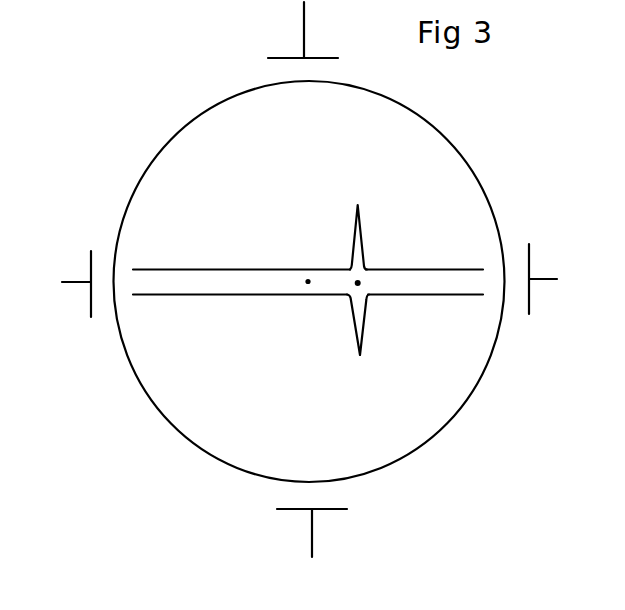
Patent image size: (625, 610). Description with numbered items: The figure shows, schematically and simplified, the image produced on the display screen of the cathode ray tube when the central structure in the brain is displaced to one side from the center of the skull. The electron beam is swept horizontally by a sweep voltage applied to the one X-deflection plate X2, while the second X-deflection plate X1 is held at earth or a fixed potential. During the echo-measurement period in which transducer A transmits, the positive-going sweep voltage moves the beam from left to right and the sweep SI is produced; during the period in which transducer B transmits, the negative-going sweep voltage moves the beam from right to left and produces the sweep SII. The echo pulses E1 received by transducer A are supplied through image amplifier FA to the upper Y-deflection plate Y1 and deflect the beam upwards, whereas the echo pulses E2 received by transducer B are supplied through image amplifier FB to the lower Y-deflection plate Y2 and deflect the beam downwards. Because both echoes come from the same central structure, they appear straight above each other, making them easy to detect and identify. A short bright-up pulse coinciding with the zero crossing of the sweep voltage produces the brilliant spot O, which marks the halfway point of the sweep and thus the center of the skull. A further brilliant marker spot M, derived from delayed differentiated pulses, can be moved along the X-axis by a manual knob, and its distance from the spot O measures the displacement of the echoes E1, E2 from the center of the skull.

The upper Y-deflection plate Y1 is at (310, 30).
The lower Y-deflection plate Y2 is at (319, 533).
The second X-deflection plate X1 is at (70, 284).
The X-deflection plate X2 is at (547, 279).
The sweep SI is at (252, 270).
The sweep SII is at (248, 296).
The brilliant spot O is at (308, 283).
The echo pulses E1 is at (362, 226).
The echo pulses E2 is at (364, 331).
The brilliant marker spot M is at (358, 282).